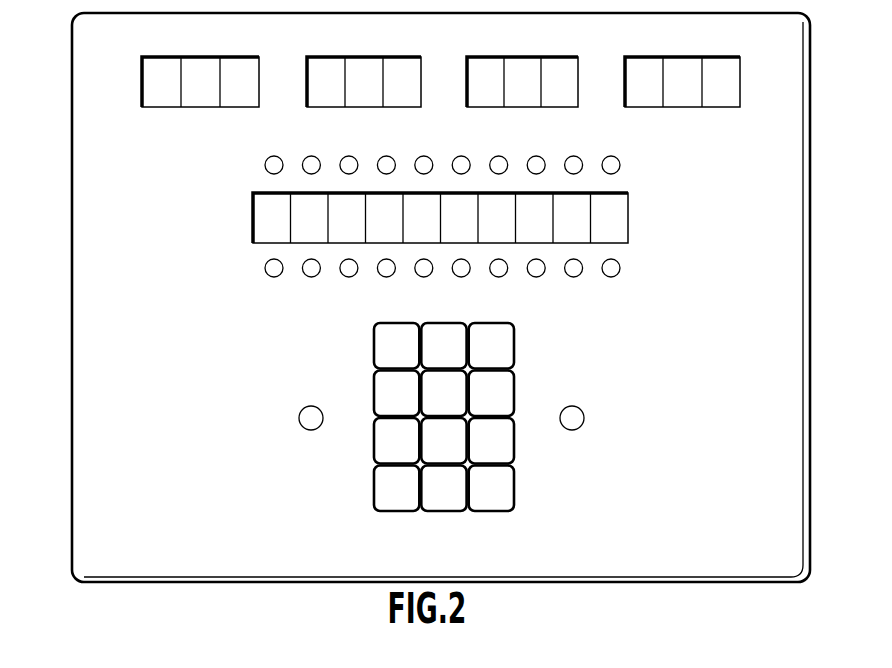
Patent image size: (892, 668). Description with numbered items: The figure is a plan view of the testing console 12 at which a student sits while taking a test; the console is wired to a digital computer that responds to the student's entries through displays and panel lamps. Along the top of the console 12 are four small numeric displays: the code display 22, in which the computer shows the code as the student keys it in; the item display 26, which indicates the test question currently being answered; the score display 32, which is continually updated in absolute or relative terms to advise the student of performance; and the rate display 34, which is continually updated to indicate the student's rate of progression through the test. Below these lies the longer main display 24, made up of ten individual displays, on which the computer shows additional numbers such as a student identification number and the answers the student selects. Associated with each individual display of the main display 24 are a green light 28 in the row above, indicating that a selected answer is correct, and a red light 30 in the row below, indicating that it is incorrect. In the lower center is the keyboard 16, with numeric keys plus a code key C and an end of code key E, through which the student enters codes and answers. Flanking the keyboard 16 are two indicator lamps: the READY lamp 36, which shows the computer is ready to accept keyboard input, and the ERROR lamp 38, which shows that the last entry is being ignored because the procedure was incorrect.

The console 12 is at (79, 280).
The keyboard 16 is at (515, 356).
The display 22 is at (230, 57).
The main display 24 is at (253, 213).
The item display 26 is at (393, 57).
The green light 28 is at (308, 157).
The red light 30 is at (310, 277).
The score display 32 is at (533, 57).
The rate display 34 is at (708, 57).
The READY lamp 36 is at (303, 409).
The ERROR lamp 38 is at (582, 410).